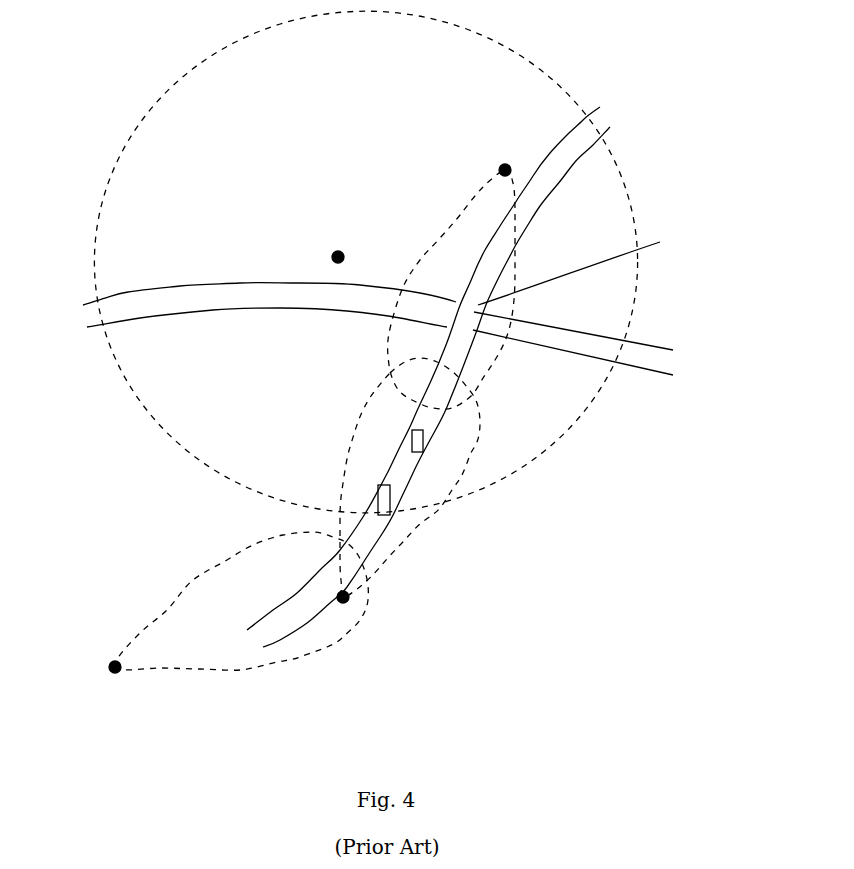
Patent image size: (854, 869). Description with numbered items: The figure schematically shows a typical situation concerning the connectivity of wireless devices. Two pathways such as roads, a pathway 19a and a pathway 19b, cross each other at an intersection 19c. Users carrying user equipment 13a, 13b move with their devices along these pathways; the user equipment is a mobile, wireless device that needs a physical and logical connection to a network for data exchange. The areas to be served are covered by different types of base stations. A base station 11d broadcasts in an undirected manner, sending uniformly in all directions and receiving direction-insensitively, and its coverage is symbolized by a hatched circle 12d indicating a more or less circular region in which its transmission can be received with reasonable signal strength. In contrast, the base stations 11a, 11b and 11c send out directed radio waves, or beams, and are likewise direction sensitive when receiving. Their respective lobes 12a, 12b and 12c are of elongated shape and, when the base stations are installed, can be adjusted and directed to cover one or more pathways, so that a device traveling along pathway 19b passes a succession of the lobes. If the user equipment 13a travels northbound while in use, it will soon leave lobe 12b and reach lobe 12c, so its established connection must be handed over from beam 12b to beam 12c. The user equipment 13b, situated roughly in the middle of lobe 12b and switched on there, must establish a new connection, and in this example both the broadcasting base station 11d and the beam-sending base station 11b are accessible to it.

The base station 11a is at (115, 667).
The base station 11b is at (343, 597).
The base station 11c is at (505, 170).
The base station 11d is at (338, 257).
The lobe 12a is at (240, 672).
The lobe 12b is at (433, 510).
The lobe 12c is at (507, 350).
The hatched circle 12d is at (147, 410).
The user equipment 13a is at (423, 440).
The user equipment 13b is at (390, 495).
The pathway 19a is at (128, 292).
The pathway 19b is at (373, 553).
The intersection 19c is at (589, 269).